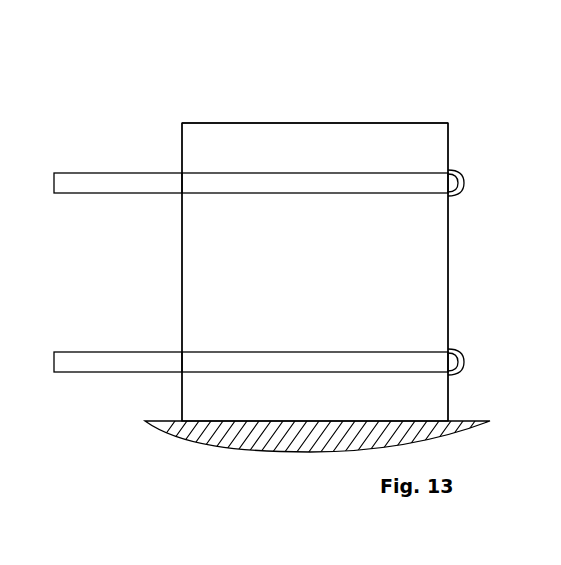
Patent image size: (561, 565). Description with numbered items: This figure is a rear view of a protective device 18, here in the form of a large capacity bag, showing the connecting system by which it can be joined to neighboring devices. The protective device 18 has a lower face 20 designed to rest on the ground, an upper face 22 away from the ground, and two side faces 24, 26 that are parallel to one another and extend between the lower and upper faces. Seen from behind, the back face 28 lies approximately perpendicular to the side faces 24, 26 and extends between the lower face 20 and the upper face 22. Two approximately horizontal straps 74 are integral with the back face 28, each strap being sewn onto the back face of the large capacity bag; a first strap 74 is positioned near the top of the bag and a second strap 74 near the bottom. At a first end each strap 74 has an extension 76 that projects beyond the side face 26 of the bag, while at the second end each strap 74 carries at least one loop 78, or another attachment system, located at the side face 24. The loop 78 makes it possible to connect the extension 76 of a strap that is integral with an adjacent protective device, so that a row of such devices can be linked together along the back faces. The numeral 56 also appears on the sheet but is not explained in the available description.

The protective device 18 is at (320, 84).
The lower face 20 is at (240, 440).
The upper face 22 is at (246, 123).
The side face 24 is at (448, 252).
The side face 26 is at (182, 262).
The back face 28 is at (373, 142).
The component 56 is at (524, 6).
The strap 74 is at (205, 176).
The extension 76 is at (88, 172).
The loop 78 is at (455, 170).